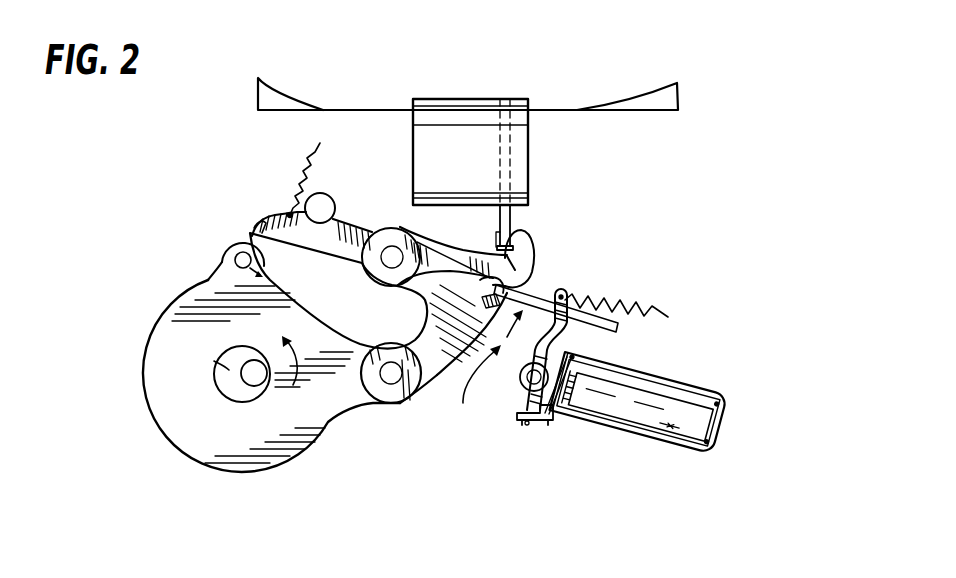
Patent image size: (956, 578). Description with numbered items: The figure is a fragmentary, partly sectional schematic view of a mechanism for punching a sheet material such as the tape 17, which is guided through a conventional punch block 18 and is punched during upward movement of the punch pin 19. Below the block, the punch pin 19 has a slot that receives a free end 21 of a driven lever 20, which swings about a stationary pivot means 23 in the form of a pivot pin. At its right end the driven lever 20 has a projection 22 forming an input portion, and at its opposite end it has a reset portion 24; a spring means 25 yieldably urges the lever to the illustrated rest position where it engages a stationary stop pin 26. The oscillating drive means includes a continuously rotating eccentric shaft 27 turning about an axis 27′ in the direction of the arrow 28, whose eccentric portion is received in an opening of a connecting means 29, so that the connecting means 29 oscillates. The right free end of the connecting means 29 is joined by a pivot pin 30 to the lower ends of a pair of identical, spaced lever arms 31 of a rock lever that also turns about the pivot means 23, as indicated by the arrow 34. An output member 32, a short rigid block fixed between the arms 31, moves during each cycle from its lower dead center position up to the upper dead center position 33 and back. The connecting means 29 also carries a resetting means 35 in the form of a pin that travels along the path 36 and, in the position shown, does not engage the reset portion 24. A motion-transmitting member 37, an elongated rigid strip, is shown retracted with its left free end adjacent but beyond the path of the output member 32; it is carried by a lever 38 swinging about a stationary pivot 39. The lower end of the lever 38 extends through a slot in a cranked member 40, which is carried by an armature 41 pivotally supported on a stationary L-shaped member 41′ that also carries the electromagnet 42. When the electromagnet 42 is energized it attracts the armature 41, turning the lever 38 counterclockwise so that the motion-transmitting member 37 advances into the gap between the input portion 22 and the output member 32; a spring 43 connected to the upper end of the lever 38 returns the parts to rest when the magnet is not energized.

The tape 17 is at (280, 97).
The punch block 18 is at (455, 100).
The punch pin 19 is at (506, 219).
The driven lever 20 is at (457, 255).
The free end 21 is at (534, 242).
The projection 22 is at (530, 272).
The pivot means 23 is at (390, 254).
The reset portion 24 is at (262, 233).
The spring means 25 is at (302, 182).
The stop pin 26 is at (323, 206).
The eccentric shaft 27 is at (242, 379).
The axis 27′ is at (256, 372).
The arrow 28 is at (305, 355).
The connecting means 29 is at (262, 463).
The pivot pin 30 is at (388, 384).
The lever arms 31 is at (444, 394).
The output member 32 is at (480, 316).
The upper dead center position 33 is at (482, 284).
The arrow 34 is at (493, 369).
The resetting means 35 is at (235, 263).
The path 36 is at (253, 244).
The motion-transmitting member 37 is at (535, 291).
The lever 38 is at (560, 326).
The stationary pivot 39 is at (520, 380).
The cranked member 40 is at (542, 424).
The armature 41 is at (590, 408).
The L-shaped member 41′ is at (673, 385).
The electromagnet 42 is at (668, 433).
The spring 43 is at (652, 308).